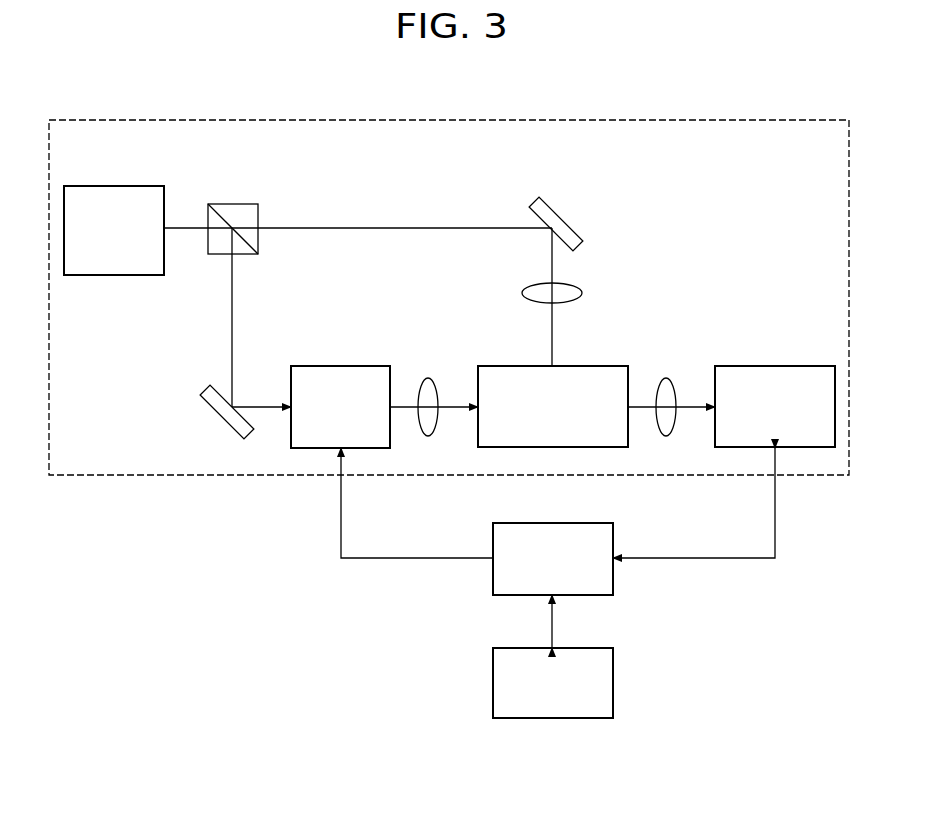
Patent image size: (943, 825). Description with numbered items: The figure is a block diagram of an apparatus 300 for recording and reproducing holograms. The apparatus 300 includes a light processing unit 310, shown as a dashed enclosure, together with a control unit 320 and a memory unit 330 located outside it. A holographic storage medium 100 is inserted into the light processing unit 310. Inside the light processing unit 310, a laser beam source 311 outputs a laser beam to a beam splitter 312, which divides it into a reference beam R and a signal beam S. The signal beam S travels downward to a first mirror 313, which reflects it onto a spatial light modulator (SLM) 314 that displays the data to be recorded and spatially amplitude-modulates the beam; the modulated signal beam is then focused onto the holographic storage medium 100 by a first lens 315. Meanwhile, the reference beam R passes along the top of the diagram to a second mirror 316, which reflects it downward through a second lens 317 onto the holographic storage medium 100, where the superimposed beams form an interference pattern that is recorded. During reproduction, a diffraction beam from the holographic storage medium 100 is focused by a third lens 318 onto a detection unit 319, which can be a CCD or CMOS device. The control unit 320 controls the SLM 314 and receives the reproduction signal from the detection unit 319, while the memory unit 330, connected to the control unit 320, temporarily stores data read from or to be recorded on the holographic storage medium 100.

The apparatus for recording/reproducing holograms 300 is at (310, 633).
The light processing unit 310 is at (147, 475).
The laser beam source 311 is at (118, 185).
The beam splitter 312 is at (235, 203).
The first mirror 313 is at (221, 416).
The spatial light modulator (SLM) 314 is at (341, 364).
The first lens 315 is at (428, 375).
The holographic storage medium 100 is at (577, 365).
The second mirror 316 is at (567, 213).
The second lens 317 is at (582, 293).
The third lens 318 is at (666, 375).
The detection unit 319 is at (775, 364).
The control unit 320 is at (570, 523).
The memory unit 330 is at (570, 647).